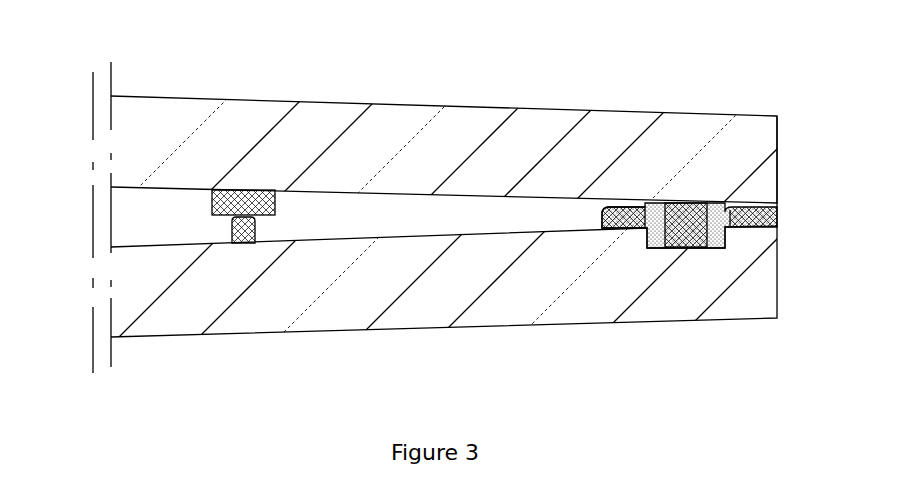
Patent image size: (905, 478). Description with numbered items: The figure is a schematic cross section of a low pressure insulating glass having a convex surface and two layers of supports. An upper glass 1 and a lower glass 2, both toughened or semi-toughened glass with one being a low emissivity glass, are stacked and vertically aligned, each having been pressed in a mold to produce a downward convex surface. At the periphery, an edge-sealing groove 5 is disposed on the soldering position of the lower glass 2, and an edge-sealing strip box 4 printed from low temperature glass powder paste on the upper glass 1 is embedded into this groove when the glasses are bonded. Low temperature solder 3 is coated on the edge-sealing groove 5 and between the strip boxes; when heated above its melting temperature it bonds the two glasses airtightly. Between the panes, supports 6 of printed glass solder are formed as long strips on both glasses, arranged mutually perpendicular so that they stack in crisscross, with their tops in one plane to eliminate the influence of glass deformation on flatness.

The upper glass 1 is at (392, 140).
The lower glass 2 is at (495, 285).
The low temperature solder 3 is at (652, 205).
The edge-sealing strip box 4 is at (686, 208).
The edge-sealing groove 5 is at (651, 248).
The support 6 is at (247, 243).